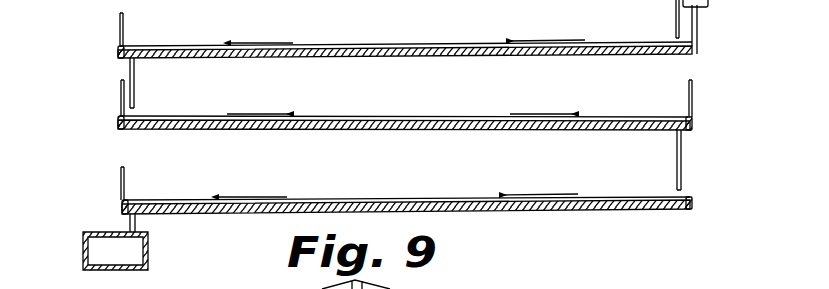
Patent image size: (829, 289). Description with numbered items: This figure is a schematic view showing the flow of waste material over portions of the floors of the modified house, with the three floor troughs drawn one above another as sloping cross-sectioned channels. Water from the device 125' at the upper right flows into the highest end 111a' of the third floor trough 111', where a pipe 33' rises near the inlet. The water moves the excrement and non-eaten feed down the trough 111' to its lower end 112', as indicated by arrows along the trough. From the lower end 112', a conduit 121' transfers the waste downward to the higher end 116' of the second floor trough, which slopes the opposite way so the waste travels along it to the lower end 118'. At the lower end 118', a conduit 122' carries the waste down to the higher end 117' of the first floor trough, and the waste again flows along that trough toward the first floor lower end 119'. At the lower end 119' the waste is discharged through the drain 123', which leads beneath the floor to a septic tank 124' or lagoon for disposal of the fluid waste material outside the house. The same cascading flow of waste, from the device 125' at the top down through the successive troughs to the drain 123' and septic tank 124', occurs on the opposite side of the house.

The trough 111' is at (405, 66).
The highest end of the trough 111a' is at (728, 44).
The lower end of the trough 112' is at (85, 49).
The feed pipe 33' is at (629, 19).
The device 125' is at (735, 9).
The conduit 121' is at (170, 83).
The higher end of the second floor trough 116' is at (378, 123).
The lower end of the second floor trough 118' is at (728, 125).
The conduit 122' is at (635, 160).
The higher end of the first floor trough 117' is at (443, 217).
The first floor lower end 119' is at (90, 193).
The drain 123' is at (176, 235).
The septic tank 124' is at (153, 260).